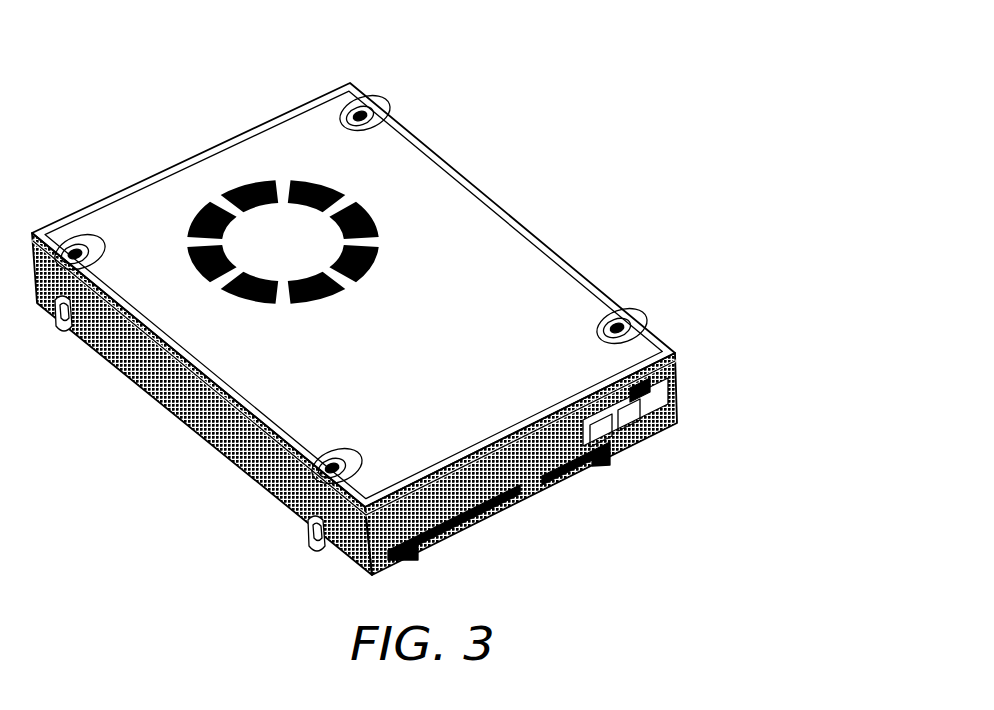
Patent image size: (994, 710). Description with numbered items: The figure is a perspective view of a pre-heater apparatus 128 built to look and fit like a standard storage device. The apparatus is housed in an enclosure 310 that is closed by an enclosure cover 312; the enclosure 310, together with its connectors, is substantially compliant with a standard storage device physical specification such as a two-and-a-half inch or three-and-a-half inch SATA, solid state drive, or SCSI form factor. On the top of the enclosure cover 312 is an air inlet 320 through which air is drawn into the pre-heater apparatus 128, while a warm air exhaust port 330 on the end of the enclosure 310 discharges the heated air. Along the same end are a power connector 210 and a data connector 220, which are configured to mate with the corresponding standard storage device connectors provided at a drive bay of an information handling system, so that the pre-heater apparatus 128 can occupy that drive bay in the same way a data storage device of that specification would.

The pre-heater apparatus 128 is at (760, 107).
The enclosure 310 is at (497, 205).
The enclosure cover 312 is at (515, 280).
The air inlet 320 is at (255, 195).
The warm air exhaust port 330 is at (630, 425).
The power connector 210 is at (465, 519).
The data connector 220 is at (553, 472).